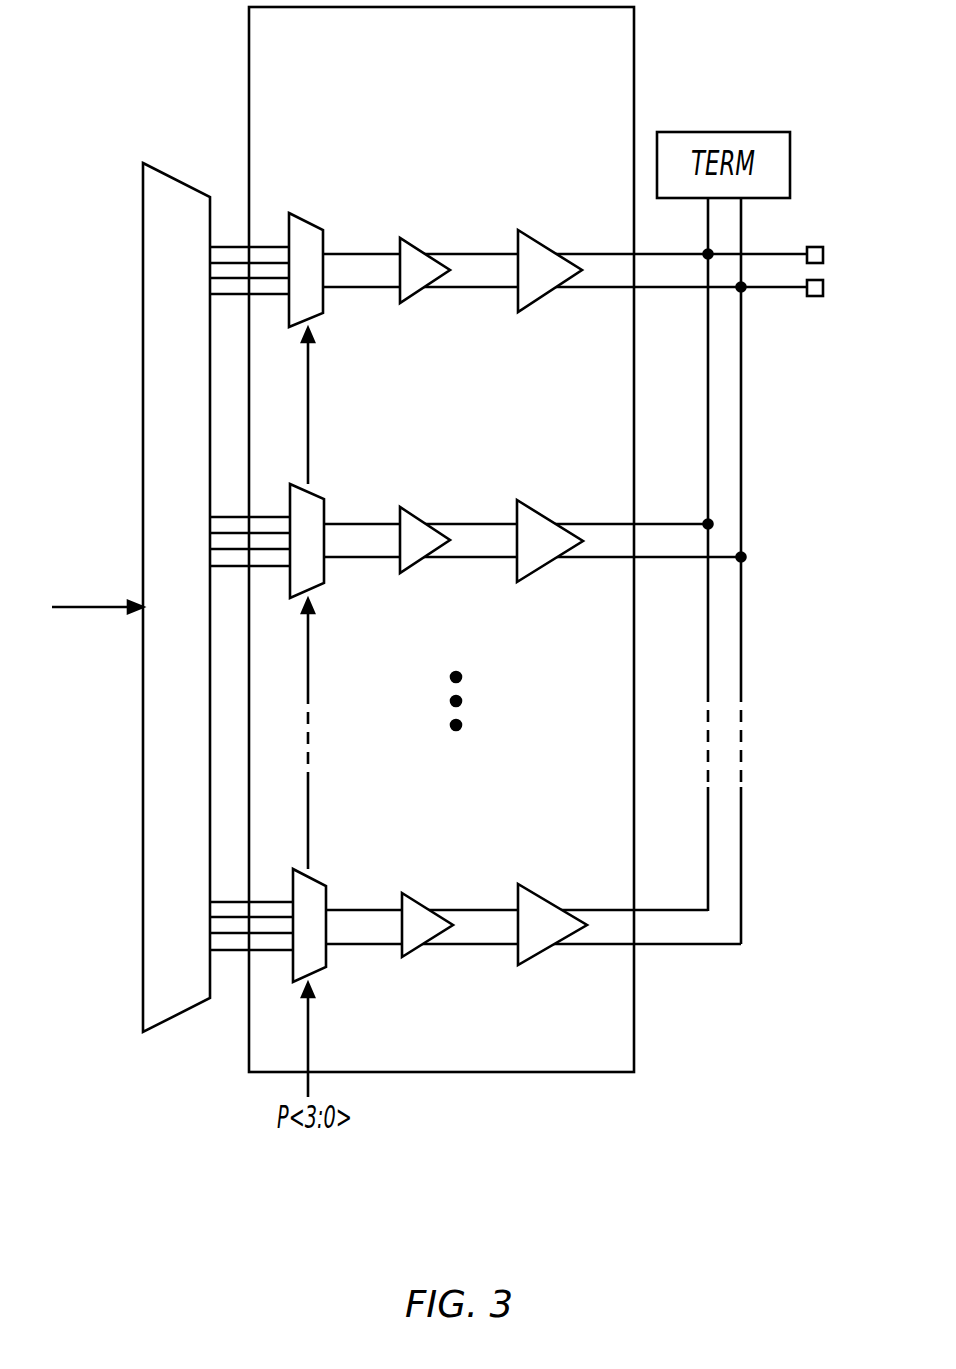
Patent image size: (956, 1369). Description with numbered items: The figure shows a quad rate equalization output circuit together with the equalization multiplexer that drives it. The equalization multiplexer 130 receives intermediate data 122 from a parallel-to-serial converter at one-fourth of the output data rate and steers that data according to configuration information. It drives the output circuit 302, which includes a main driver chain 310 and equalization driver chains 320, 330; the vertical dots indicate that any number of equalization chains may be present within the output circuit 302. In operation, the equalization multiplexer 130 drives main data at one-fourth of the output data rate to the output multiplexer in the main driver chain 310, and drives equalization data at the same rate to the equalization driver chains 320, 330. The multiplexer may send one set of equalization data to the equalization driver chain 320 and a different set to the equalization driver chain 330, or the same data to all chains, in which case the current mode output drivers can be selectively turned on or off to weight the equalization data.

The output circuit 302 is at (635, 1042).
The equalization multiplexer 130 is at (142, 243).
The intermediate data 122 is at (78, 608).
The main driver chain 310 is at (275, 212).
The equalization driver chain 320 is at (274, 482).
The equalization driver chain 330 is at (276, 867).